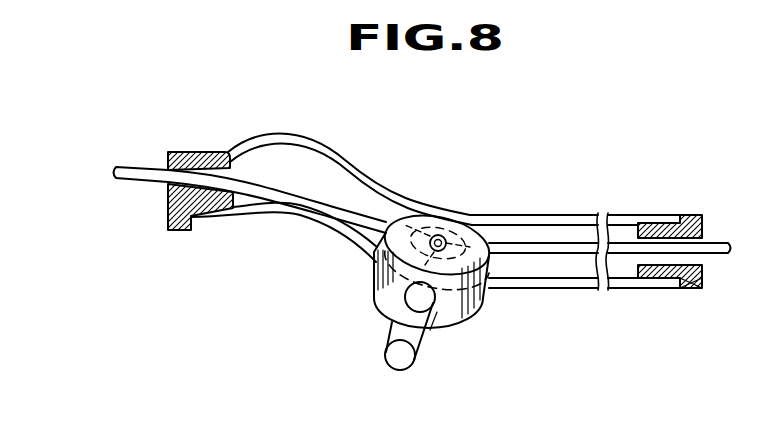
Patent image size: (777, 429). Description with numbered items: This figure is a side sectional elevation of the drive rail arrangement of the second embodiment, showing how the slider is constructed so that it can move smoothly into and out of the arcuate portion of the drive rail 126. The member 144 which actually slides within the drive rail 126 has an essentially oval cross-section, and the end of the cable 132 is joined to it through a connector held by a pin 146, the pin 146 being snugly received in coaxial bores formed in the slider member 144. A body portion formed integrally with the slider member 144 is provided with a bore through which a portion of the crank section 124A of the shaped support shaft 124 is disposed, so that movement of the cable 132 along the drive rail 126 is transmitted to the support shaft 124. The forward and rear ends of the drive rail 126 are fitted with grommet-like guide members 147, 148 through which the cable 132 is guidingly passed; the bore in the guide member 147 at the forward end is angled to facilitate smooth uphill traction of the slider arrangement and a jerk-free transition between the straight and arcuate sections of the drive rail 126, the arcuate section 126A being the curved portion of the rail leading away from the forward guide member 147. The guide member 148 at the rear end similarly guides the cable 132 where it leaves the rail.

The cable 132 is at (160, 179).
The guide member 147 is at (166, 231).
The curved tube section 126A is at (262, 213).
The slider member 144 is at (422, 217).
The pin 146 is at (441, 242).
The drive rail 126 is at (547, 289).
The guide member 148 is at (693, 284).
The crank section 124A is at (392, 337).
The support shaft 124 is at (398, 362).